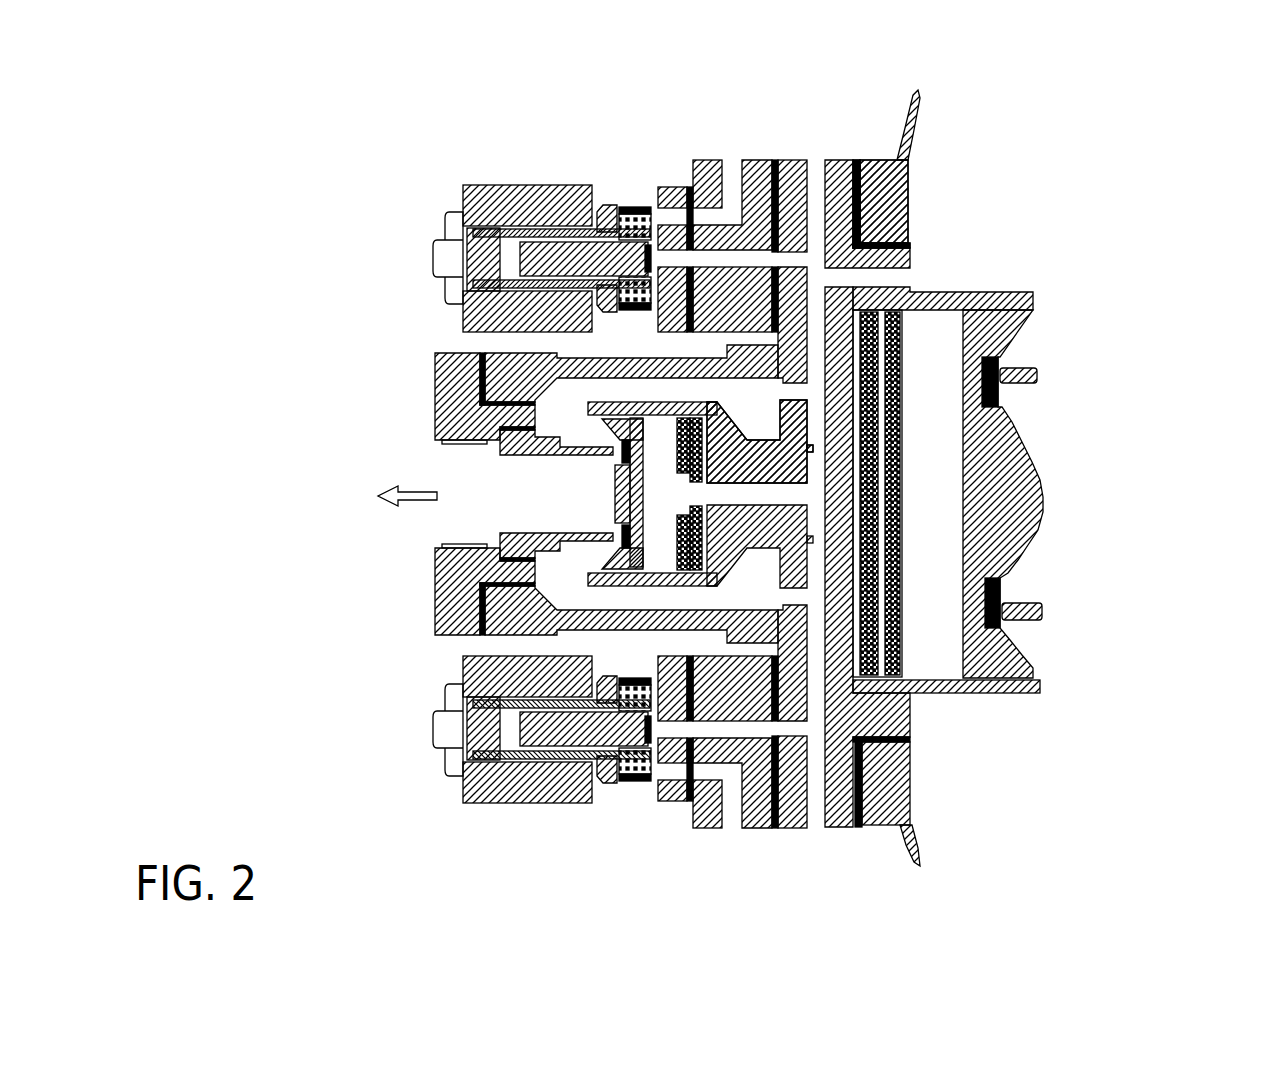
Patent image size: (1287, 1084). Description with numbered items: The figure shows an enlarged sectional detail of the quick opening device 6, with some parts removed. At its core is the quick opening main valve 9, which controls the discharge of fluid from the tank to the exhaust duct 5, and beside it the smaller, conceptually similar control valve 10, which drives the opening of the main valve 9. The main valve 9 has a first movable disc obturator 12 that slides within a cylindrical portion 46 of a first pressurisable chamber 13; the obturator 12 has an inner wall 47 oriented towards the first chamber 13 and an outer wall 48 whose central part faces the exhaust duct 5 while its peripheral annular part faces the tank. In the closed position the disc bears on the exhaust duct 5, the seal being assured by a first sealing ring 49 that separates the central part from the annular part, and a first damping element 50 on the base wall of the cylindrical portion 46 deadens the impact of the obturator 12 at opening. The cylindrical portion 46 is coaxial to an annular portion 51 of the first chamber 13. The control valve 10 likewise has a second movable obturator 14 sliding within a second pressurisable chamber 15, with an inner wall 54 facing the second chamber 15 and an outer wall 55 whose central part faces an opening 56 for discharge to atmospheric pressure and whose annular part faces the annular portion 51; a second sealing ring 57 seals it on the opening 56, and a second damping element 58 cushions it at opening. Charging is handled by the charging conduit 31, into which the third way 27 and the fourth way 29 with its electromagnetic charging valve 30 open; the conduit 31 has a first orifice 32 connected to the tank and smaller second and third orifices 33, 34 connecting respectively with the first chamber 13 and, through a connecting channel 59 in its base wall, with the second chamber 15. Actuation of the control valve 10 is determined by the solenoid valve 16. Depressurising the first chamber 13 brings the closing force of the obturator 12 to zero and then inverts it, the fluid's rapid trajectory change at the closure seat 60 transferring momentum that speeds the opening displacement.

The exhaust duct 5 is at (1037, 380).
The quick opening device 6 is at (952, 242).
The quick opening main valve 9 is at (1084, 489).
The control valve 10 is at (565, 509).
The first movable obturator 12 is at (1040, 510).
The first pressurisable chamber 13 is at (1017, 568).
The second movable obturator 14 is at (600, 482).
The second pressurisable chamber 15 is at (593, 572).
The solenoid valve 16 is at (550, 730).
The third way 27 is at (817, 175).
The fourth way 29 is at (732, 182).
The electromagnetic charging valve 30 is at (498, 205).
The charging conduit 31 is at (903, 213).
The first orifice 32 is at (863, 277).
The second orifice 33 is at (758, 396).
The third orifice 34 is at (823, 437).
The cylindrical portion 46 is at (920, 482).
The inner wall 47 is at (1033, 290).
The outer wall 48 is at (1037, 663).
The first sealing ring 49 is at (998, 622).
The first damping element 50 is at (763, 572).
The annular portion 51 is at (690, 595).
The inner wall 54 is at (813, 645).
The outer wall 55 is at (600, 518).
The opening 56 is at (500, 442).
The second sealing ring 57 is at (472, 382).
The second damping element 58 is at (672, 583).
The connecting channel 59 is at (868, 742).
The closure seat 60 is at (1020, 361).